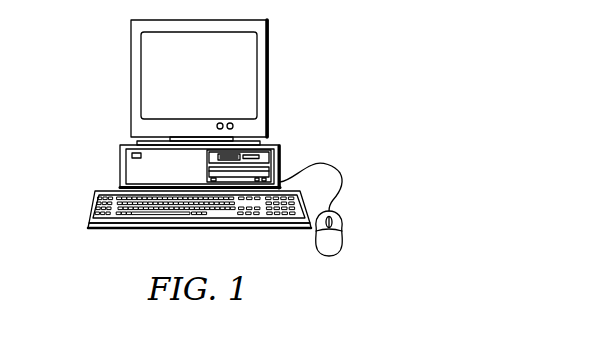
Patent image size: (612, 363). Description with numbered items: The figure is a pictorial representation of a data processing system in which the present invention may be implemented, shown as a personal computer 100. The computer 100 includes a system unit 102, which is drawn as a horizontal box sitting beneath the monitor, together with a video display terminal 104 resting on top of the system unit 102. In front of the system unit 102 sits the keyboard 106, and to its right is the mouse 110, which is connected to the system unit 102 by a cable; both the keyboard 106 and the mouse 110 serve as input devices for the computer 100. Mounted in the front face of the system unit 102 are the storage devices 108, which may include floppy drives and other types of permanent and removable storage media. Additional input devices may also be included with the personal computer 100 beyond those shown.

The computer 100 is at (75, 70).
The system unit 102 is at (120, 163).
The video display terminal 104 is at (269, 79).
The keyboard 106 is at (112, 230).
The storage devices 108 is at (245, 153).
The mouse 110 is at (329, 256).